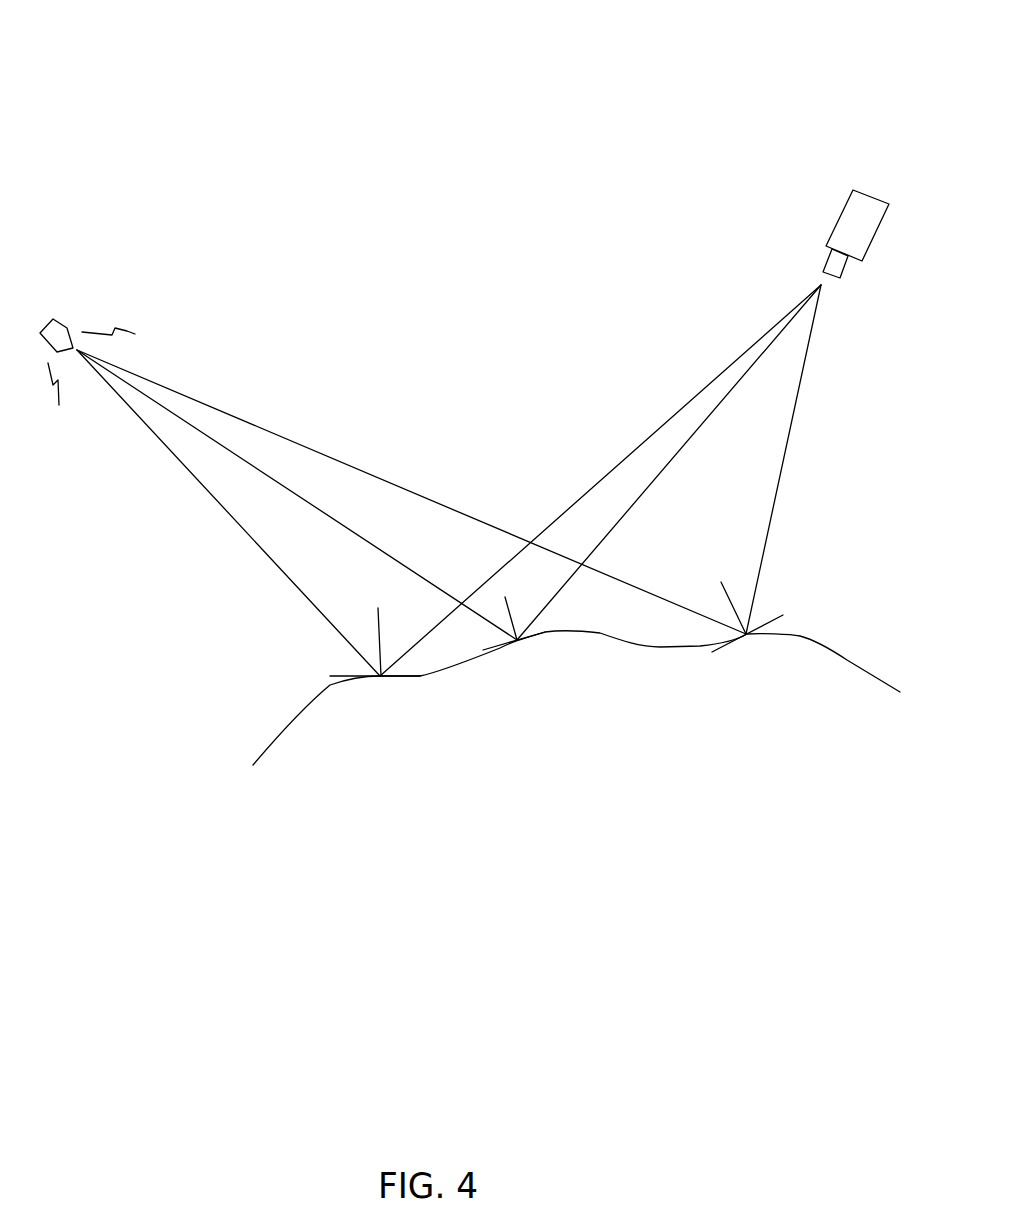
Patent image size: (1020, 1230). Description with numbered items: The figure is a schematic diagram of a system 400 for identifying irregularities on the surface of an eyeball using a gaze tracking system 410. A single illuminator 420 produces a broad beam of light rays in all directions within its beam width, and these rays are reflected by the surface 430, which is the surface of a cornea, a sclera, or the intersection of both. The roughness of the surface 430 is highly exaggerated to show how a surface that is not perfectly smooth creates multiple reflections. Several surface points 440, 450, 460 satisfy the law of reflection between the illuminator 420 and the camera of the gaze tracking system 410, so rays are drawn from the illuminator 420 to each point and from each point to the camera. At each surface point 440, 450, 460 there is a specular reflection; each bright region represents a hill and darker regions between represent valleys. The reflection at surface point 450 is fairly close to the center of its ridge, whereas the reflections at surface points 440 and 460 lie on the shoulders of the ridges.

The system 400 is at (428, 875).
The gaze tracking system 410 is at (870, 197).
The illuminator 420 is at (67, 326).
The surface 430 is at (872, 673).
The surface point 440 is at (381, 676).
The surface point 450 is at (517, 640).
The surface point 460 is at (747, 634).